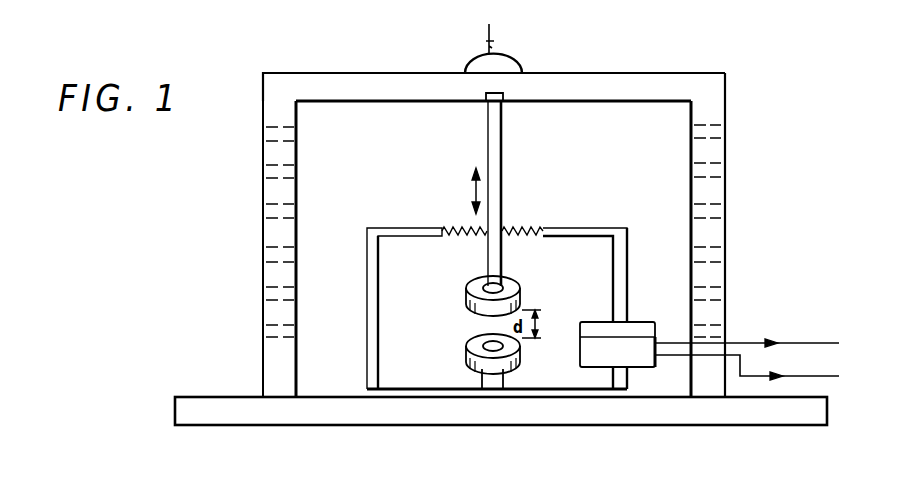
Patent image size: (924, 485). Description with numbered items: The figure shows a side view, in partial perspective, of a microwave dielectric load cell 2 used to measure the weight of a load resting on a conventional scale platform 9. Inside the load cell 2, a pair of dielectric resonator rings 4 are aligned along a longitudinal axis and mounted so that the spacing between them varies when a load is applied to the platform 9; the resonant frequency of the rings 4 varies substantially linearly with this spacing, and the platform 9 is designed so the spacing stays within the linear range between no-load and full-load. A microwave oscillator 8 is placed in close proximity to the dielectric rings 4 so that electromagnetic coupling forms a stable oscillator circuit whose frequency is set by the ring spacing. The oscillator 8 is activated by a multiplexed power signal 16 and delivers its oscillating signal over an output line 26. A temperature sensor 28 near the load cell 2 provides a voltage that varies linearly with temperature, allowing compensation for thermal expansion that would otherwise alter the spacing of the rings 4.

The microwave dielectric load cell 2 is at (264, 183).
The scale platform 9 is at (718, 73).
The dielectric resonator rings 4 is at (468, 338).
The temperature sensor 28 is at (641, 322).
The microwave oscillator 8 is at (615, 449).
The multiplexed power signal 16 is at (823, 343).
The output line 26 is at (832, 377).